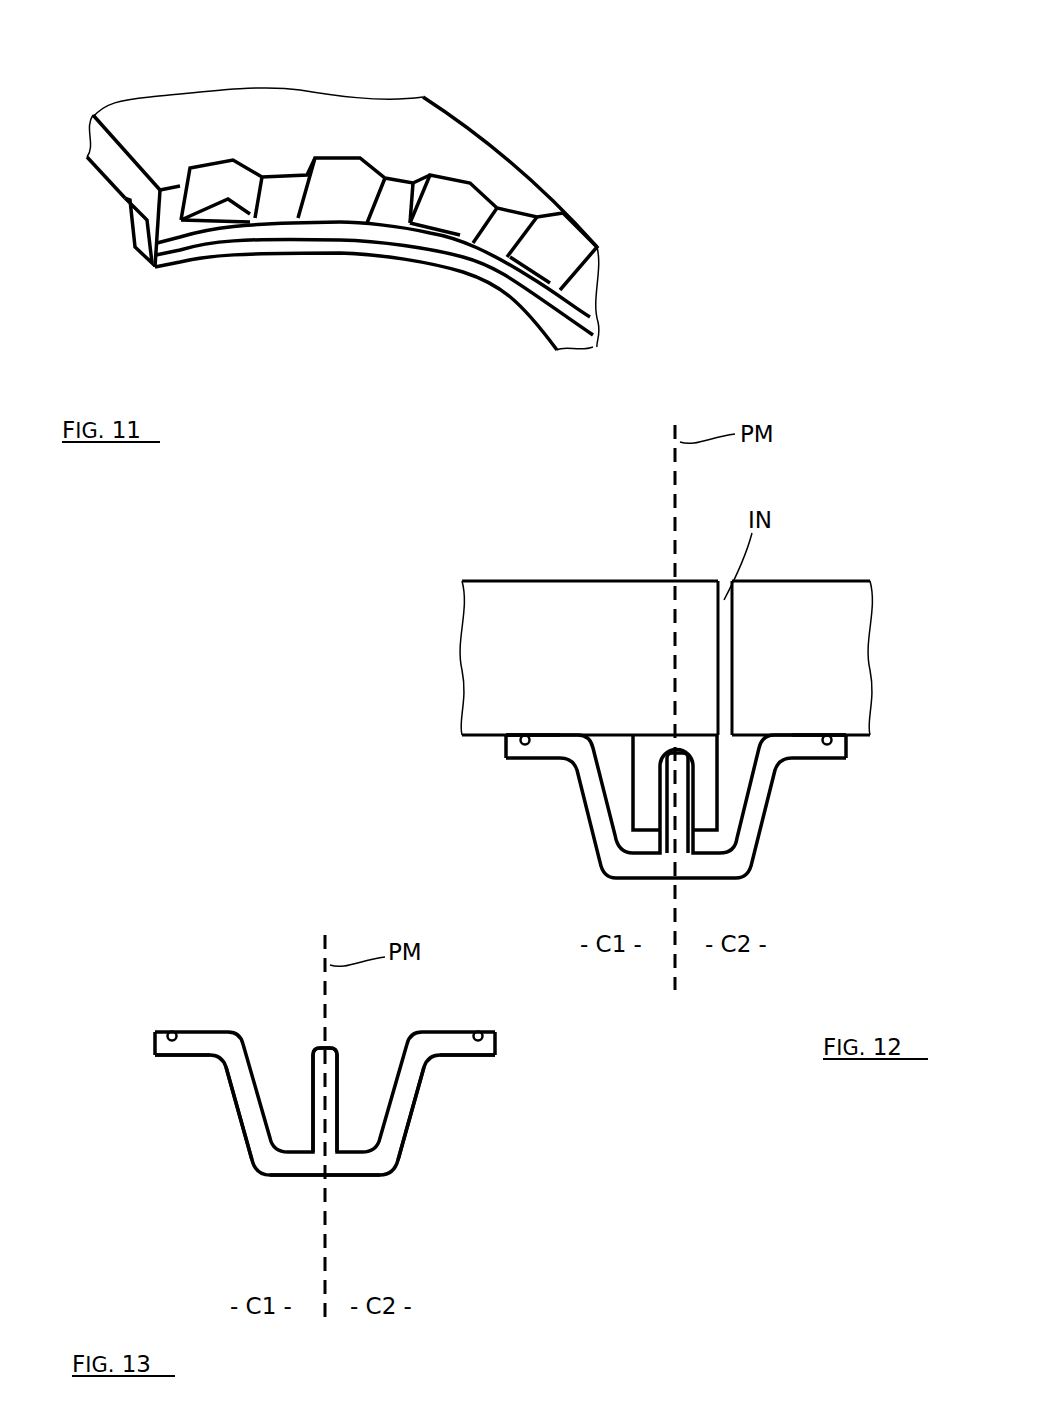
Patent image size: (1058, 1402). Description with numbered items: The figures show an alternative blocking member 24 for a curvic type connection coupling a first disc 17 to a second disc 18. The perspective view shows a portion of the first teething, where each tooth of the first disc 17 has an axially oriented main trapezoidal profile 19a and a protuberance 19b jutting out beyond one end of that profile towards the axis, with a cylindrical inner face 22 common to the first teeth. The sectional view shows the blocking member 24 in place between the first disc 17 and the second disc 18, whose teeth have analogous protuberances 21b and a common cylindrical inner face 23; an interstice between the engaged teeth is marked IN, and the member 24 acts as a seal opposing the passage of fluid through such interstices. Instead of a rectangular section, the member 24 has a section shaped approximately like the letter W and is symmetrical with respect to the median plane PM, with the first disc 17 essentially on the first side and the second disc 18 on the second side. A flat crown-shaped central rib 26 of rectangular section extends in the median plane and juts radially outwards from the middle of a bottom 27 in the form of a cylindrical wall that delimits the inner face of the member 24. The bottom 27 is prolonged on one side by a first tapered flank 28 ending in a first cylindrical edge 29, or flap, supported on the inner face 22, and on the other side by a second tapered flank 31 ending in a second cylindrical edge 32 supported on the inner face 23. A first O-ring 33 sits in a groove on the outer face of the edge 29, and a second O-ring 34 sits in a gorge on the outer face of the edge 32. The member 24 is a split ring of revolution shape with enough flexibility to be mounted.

In FIG. 11, the first disc 17 is at (125, 112).
In FIG. 12, the first disc 17 is at (518, 602).
In FIG. 12, the second disc 18 is at (810, 602).
In FIG. 11, the main trapezoidal profile 19a is at (503, 193).
In FIG. 11, the protuberance 19b is at (490, 240).
In FIG. 12, the protuberance 19b is at (708, 797).
In FIG. 12, the protuberance 21b is at (648, 799).
In FIG. 12, the cylindrical inner face 22 is at (487, 742).
In FIG. 12, the cylindrical inner face 23 is at (860, 737).
In FIG. 11, the blocking member 24 is at (252, 258).
In FIG. 12, the blocking member 24 is at (780, 873).
In FIG. 13, the blocking member 24 is at (436, 1188).
In FIG. 13, the central rib 26 is at (320, 1082).
In FIG. 13, the bottom 27 is at (295, 1163).
In FIG. 13, the first tapered flank 28 is at (243, 1103).
In FIG. 13, the first cylindrical edge 29 is at (195, 1047).
In FIG. 13, the second tapered flank 31 is at (410, 1103).
In FIG. 13, the second cylindrical edge 32 is at (460, 1047).
In FIG. 13, the first O-ring 33 is at (170, 1030).
In FIG. 13, the second O-ring 34 is at (481, 1030).